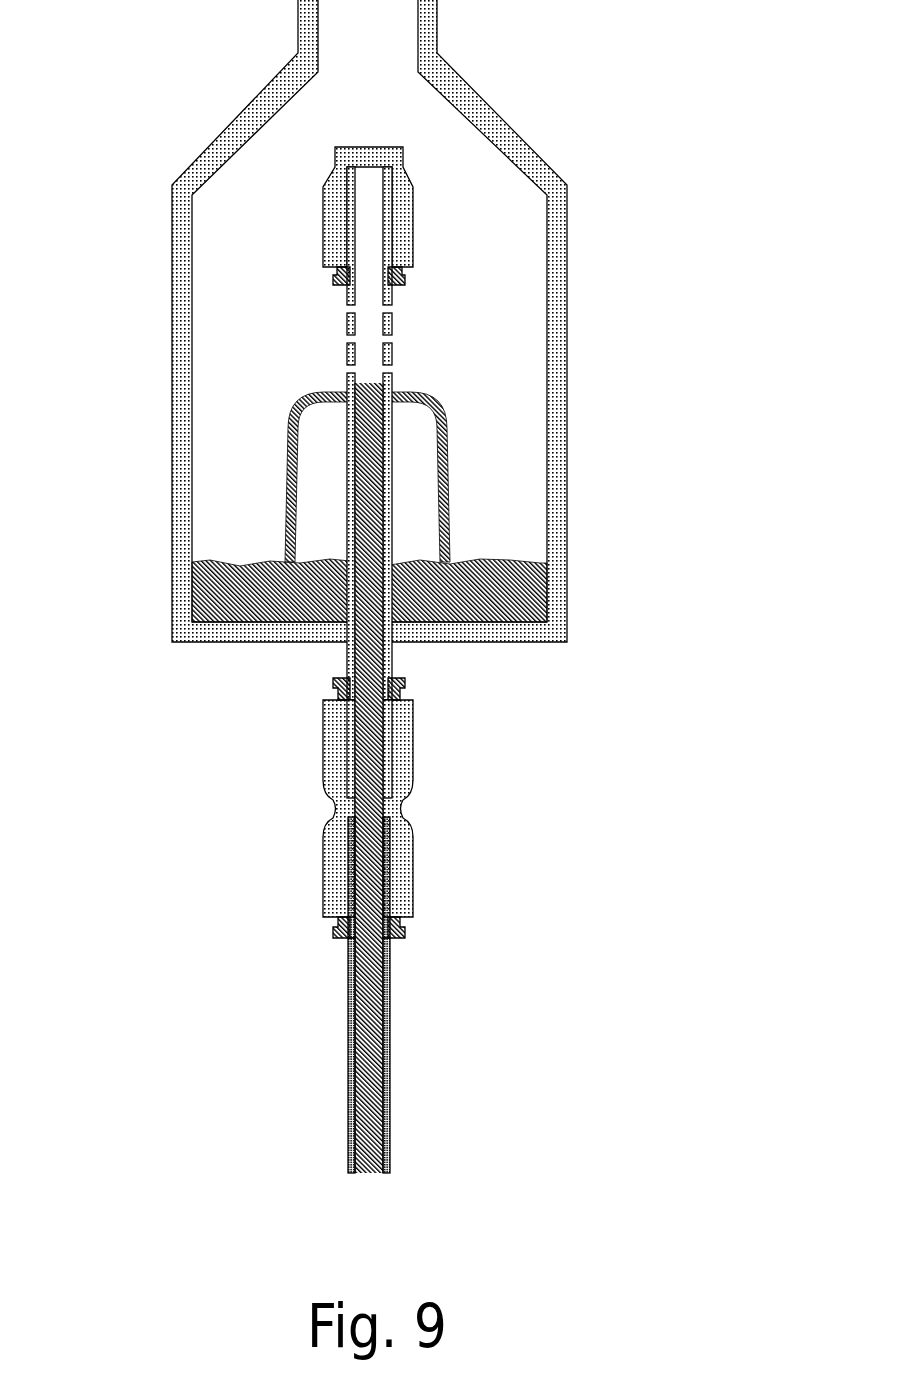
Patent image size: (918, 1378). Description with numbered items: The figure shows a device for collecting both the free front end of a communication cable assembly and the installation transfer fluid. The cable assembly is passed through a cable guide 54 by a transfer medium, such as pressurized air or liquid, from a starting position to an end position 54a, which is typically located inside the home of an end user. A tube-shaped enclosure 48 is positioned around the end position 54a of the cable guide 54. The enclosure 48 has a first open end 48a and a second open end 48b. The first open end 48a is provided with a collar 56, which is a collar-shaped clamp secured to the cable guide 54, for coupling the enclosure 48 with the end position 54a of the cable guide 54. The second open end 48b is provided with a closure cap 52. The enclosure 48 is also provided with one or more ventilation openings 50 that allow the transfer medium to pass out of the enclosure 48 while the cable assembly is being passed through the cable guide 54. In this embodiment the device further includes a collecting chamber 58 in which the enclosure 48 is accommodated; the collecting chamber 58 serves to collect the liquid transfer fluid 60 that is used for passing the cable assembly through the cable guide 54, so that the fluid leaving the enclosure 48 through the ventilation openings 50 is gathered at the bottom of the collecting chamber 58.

The enclosure 48 is at (390, 445).
The first open end 48a is at (390, 763).
The second open end 48b is at (350, 222).
The ventilation openings 50 is at (390, 340).
The closure cap 52 is at (403, 220).
The cable guide 54 is at (350, 1025).
The end position 54a is at (393, 870).
The collar 56 is at (337, 748).
The collecting chamber 58 is at (265, 113).
The liquid transfer fluid 60 is at (232, 570).